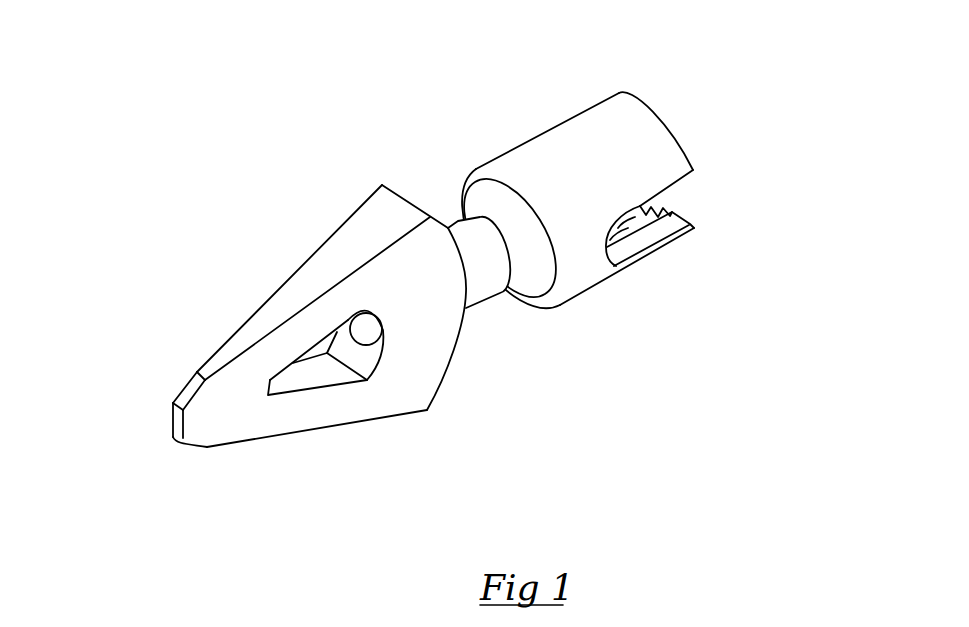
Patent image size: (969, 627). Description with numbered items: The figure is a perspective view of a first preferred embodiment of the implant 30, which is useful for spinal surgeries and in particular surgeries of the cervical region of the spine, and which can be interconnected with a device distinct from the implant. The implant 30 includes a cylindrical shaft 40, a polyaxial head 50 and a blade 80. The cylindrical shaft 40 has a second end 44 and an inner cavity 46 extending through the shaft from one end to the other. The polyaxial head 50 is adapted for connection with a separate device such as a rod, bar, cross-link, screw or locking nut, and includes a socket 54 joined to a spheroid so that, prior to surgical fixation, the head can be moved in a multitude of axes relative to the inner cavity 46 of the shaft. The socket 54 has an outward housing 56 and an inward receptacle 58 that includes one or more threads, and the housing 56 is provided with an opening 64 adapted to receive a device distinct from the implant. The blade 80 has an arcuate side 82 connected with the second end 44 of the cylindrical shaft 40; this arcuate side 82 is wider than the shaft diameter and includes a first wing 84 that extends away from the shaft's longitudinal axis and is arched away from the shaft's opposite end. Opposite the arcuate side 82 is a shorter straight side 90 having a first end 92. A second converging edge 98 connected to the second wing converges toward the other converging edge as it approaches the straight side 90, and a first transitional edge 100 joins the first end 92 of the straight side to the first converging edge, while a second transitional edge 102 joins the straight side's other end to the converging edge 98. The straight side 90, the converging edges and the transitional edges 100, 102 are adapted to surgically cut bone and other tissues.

The implant 30 is at (315, 327).
The cylindrical shaft 40 is at (453, 222).
The second end 44 is at (369, 347).
The inner cavity 46 is at (362, 325).
The polyaxial head 50 is at (669, 212).
The socket 54 is at (607, 280).
The housing 56 is at (541, 133).
The inward receptacle 58 is at (734, 239).
The opening 64 is at (653, 235).
The blade 80 is at (248, 326).
The arcuate side 82 is at (467, 385).
The first wing 84 is at (407, 197).
The straight side 90 is at (165, 430).
The first end 92 is at (190, 372).
The second converging edge 98 is at (293, 437).
The first transitional edge 100 is at (196, 402).
The second transitional edge 102 is at (193, 445).